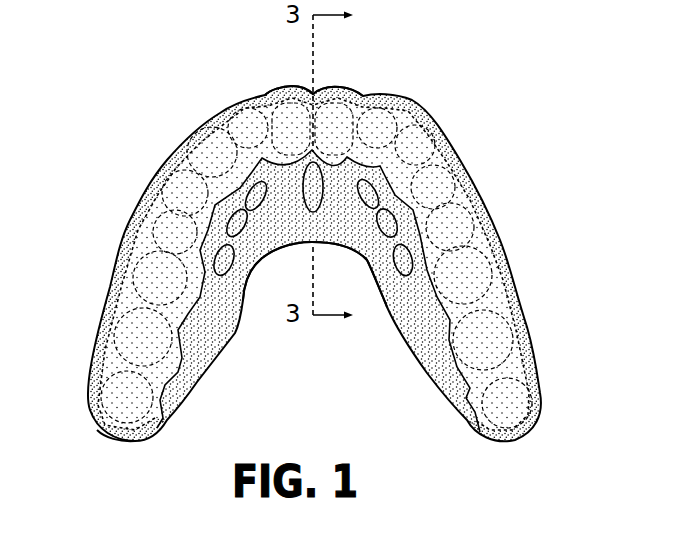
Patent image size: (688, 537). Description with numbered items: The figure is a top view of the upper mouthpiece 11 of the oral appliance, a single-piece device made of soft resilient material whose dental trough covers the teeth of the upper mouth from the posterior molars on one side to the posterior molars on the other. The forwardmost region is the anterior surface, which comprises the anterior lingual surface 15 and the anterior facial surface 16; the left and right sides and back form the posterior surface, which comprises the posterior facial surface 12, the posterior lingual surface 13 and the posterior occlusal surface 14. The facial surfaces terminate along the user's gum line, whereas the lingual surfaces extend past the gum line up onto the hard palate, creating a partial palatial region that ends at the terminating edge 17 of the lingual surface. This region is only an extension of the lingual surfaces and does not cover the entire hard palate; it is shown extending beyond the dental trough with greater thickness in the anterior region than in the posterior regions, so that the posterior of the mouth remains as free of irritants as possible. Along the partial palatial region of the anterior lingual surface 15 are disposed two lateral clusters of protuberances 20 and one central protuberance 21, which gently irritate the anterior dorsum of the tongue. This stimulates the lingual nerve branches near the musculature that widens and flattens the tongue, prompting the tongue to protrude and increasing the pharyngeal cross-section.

The upper mouthpiece 11 is at (490, 70).
The posterior facial surface 12 is at (110, 298).
The posterior lingual surface 13 is at (205, 365).
The posterior occlusal surface 14 is at (115, 435).
The anterior lingual surface 15 is at (343, 205).
The anterior facial surface 16 is at (277, 88).
The terminating edge 17 is at (294, 249).
The lateral clusters of protuberances 20 is at (243, 328).
The central protuberance 21 is at (318, 214).